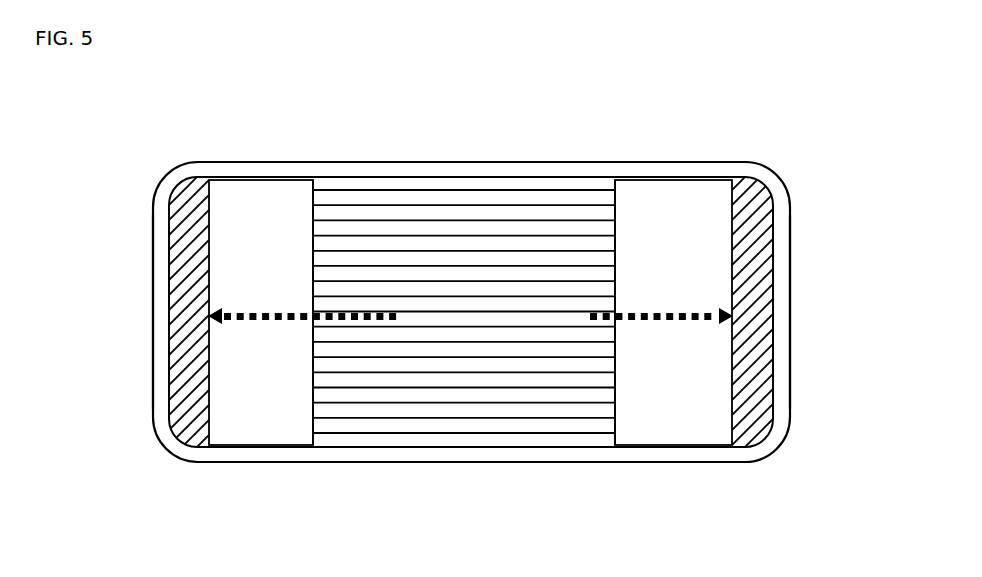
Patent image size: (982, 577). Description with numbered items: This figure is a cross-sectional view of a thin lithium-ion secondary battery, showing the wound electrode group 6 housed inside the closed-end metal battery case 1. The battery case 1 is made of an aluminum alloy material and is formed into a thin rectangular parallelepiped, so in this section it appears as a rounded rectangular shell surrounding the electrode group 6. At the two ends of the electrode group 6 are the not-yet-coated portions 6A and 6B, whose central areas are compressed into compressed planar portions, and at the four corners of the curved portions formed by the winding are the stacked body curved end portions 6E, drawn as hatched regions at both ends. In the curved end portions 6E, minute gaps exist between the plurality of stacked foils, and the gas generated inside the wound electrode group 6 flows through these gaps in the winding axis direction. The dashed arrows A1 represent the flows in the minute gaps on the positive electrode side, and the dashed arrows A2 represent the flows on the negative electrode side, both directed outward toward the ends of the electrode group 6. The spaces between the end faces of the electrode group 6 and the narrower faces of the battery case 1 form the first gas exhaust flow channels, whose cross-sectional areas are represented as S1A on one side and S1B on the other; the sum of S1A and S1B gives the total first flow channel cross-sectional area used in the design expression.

The battery case 1 is at (780, 350).
The electrode group 6 is at (540, 207).
The not-yet-coated portion 6A is at (260, 195).
The not-yet-coated portion 6B is at (677, 198).
The stacked body curved end portion 6E is at (205, 364).
The cross-sectional area of first gas exhaust flow channel S1A is at (190, 278).
The cross-sectional area of first gas exhaust flow channel S1B is at (750, 282).
The dashed arrows A1 is at (292, 320).
The dashed arrows A2 is at (653, 318).